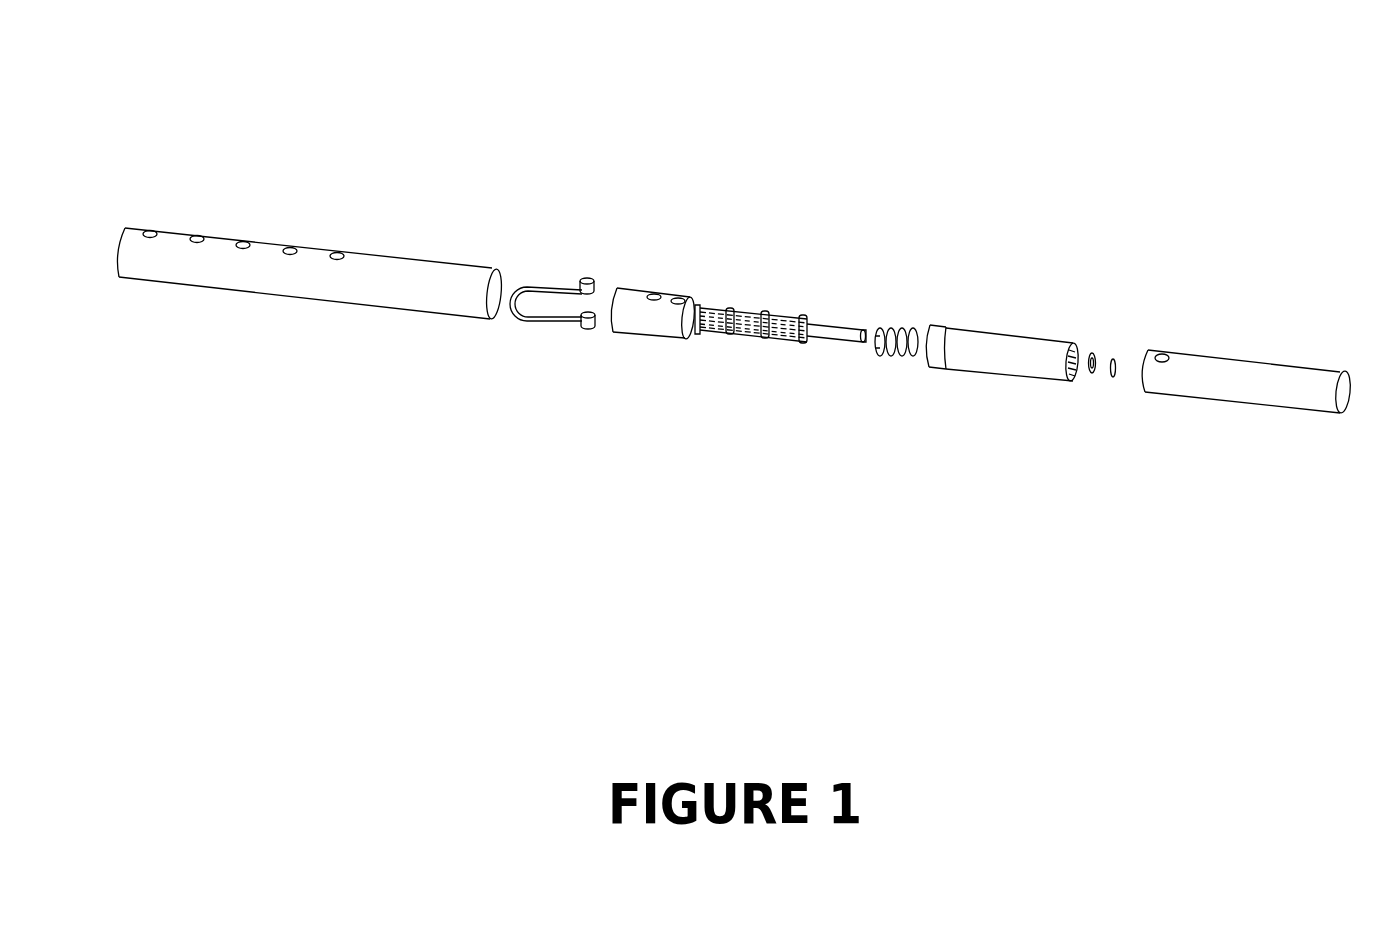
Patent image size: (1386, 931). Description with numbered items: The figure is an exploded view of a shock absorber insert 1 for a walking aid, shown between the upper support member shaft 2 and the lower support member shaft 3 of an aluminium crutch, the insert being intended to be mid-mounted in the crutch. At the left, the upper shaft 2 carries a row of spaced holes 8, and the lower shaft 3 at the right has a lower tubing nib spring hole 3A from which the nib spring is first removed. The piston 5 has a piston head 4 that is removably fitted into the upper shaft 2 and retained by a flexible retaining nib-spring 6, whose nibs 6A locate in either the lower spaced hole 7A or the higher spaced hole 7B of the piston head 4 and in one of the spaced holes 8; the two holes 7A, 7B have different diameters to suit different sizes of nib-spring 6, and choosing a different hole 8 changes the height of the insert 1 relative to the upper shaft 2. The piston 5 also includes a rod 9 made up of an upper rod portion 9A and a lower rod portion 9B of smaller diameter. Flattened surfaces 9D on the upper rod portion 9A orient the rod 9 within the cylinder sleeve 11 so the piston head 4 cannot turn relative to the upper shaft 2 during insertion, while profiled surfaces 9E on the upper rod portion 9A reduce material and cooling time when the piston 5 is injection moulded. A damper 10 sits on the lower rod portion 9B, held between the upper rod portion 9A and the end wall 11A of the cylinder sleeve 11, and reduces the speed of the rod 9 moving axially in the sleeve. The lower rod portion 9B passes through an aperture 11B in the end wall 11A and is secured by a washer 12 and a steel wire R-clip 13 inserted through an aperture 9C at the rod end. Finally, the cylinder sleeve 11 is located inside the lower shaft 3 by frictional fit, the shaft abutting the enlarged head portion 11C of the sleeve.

The shock absorber insert 1 is at (956, 105).
The upper support member shaft 2 is at (383, 253).
The spaced holes 8 is at (339, 253).
The flexible retaining nib-spring 6 is at (573, 333).
The nibs 6A is at (587, 340).
The piston head 4 is at (647, 318).
The lower spaced hole 7A is at (657, 293).
The higher spaced hole 7B is at (679, 296).
The piston 5 is at (803, 282).
The profiled surfaces 9E is at (712, 336).
The flattened surfaces 9D is at (732, 308).
The rod 9 is at (768, 311).
The upper rod portion 9A is at (804, 315).
The lower rod portion 9B is at (832, 325).
The aperture 9C is at (866, 323).
The damper 10 is at (895, 360).
The cylinder sleeve 11 is at (1034, 360).
The enlarged head portion 11C is at (946, 330).
The aperture 11B is at (1072, 346).
The end wall 11A is at (1078, 378).
The washer 12 is at (1093, 352).
The R-clip 13 is at (1117, 358).
The lower support member shaft 3 is at (1252, 360).
The lower tubing nib spring hole 3A is at (1168, 355).